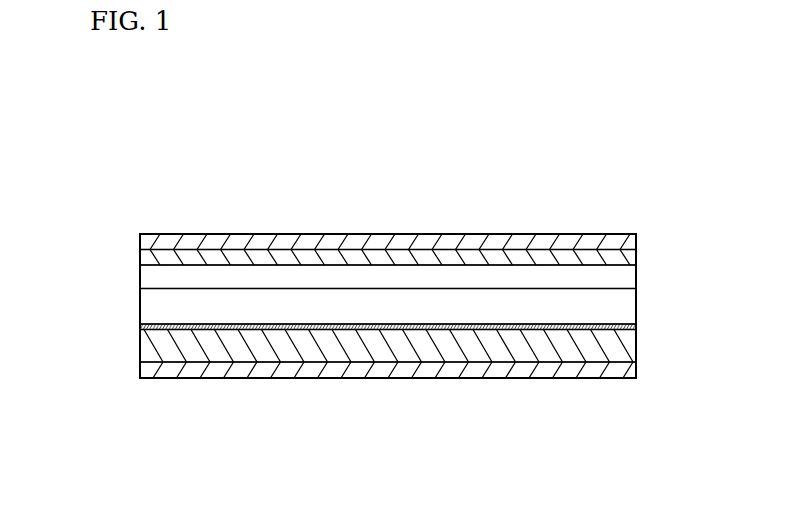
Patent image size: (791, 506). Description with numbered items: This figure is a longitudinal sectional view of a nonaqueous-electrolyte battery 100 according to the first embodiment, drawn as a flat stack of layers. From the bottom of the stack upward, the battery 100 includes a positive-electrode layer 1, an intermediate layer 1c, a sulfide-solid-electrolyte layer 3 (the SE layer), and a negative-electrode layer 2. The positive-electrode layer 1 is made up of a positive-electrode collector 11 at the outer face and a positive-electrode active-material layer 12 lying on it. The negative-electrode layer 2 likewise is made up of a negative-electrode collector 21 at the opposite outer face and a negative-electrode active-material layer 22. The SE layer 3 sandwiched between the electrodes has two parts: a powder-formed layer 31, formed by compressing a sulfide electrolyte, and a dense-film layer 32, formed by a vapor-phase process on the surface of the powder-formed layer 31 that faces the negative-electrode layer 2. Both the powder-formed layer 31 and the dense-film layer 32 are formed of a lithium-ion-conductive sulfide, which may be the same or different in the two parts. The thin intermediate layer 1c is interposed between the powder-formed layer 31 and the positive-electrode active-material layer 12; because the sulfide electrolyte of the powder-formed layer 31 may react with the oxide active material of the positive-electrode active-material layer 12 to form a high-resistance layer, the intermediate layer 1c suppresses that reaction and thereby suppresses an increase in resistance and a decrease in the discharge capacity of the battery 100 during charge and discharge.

The nonaqueous-electrolyte battery 100 is at (448, 205).
The positive-electrode layer 1 is at (52, 385).
The positive-electrode collector 11 is at (153, 378).
The positive-electrode active-material layer 12 is at (140, 350).
The intermediate layer 1c is at (140, 325).
The negative-electrode layer 2 is at (137, 157).
The negative-electrode collector 21 is at (162, 236).
The negative-electrode active-material layer 22 is at (140, 253).
The sulfide-solid-electrolyte layer 3 is at (702, 262).
The powder-formed layer 31 is at (636, 306).
The dense-film layer 32 is at (636, 276).